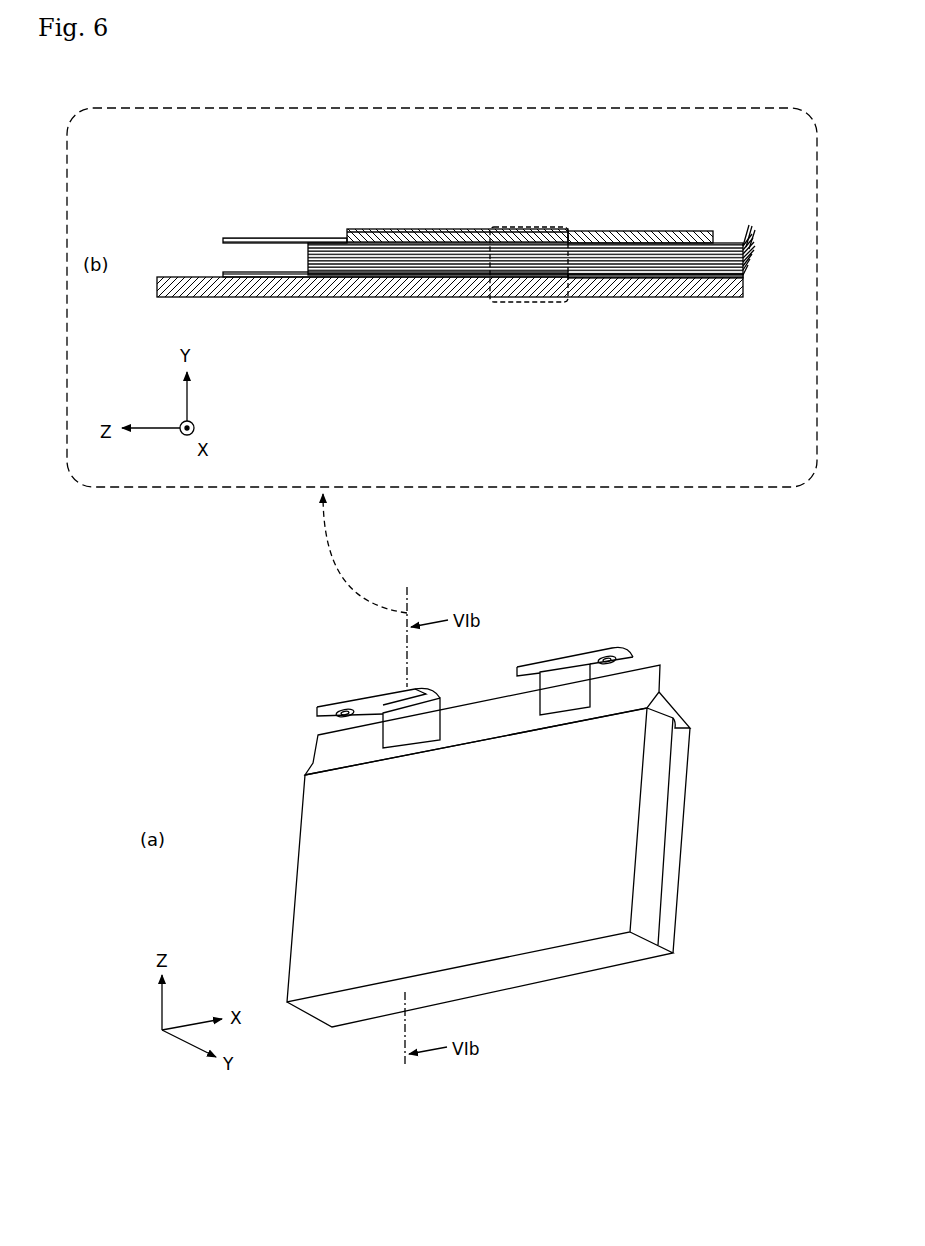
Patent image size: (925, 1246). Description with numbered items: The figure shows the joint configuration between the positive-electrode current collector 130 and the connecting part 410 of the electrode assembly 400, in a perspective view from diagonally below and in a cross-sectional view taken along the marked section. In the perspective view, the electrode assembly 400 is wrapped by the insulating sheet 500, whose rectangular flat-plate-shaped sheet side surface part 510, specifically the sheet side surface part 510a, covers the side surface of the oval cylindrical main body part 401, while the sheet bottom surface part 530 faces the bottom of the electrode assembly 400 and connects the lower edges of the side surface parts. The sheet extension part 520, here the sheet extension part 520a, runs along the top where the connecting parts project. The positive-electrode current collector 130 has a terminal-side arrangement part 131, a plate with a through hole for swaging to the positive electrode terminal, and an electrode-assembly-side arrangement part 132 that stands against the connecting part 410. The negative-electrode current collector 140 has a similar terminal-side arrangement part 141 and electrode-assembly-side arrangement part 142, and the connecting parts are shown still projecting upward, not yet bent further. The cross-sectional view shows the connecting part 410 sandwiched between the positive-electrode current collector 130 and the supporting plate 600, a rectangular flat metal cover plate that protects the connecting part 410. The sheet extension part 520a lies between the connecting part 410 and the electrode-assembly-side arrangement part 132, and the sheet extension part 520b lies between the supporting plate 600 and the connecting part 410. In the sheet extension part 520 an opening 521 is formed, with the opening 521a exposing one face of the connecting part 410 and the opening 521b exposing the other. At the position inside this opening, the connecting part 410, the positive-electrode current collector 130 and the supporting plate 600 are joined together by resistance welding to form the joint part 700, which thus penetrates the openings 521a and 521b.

The positive-electrode current collector 130 is at (450, 540).
The terminal-side arrangement part 131 is at (372, 690).
The electrode-assembly-side arrangement part 132 is at (440, 298).
The negative-electrode current collector 140 is at (577, 678).
The terminal-side arrangement part 141 is at (543, 657).
The electrode-assembly-side arrangement part 142 is at (565, 700).
The electrode assembly 400 is at (717, 822).
The main body part 401 is at (661, 827).
The connecting part 410 is at (449, 229).
The insulating sheet 500 is at (537, 863).
The sheet side surface part 510 is at (467, 855).
The sheet side surface part 510a is at (515, 861).
The sheet extension part 520 is at (441, 476).
The sheet extension part 520a is at (332, 278).
The sheet extension part 520b is at (313, 240).
The opening 521 is at (655, 259).
The opening 521a is at (632, 278).
The opening 521b is at (620, 231).
The sheet bottom surface part 530 is at (511, 986).
The supporting plate 600 is at (400, 229).
The joint part 700 is at (518, 227).